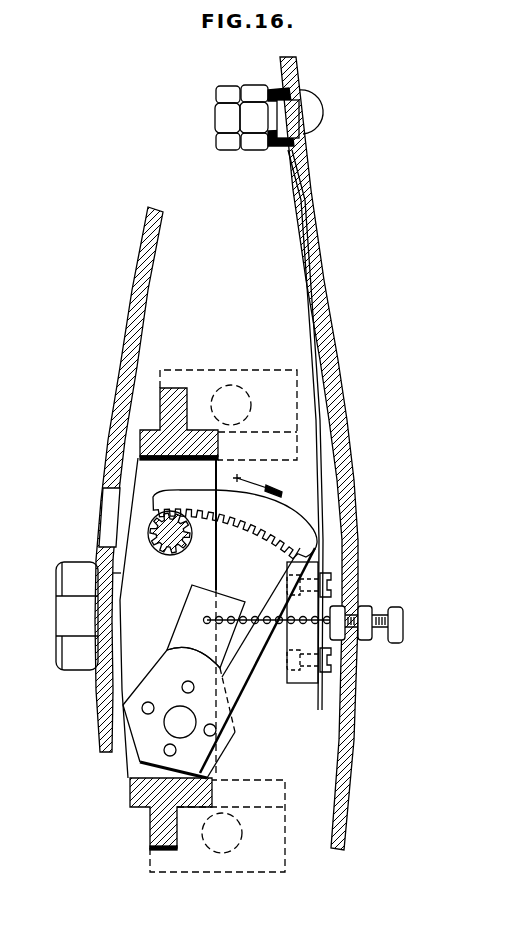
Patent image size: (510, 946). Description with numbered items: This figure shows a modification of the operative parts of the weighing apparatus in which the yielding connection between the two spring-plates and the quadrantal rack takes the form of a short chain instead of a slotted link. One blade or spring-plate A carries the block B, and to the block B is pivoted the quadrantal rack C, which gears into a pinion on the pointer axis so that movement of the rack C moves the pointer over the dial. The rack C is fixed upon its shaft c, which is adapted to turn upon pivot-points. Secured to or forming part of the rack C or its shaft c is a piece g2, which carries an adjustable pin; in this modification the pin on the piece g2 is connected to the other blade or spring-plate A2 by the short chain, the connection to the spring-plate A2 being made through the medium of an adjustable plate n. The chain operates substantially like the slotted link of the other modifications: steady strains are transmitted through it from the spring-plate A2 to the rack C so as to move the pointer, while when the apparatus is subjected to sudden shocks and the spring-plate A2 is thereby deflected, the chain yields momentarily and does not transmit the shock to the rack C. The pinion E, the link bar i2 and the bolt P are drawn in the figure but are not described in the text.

The blade or spring-plate A is at (135, 291).
The other blade or spring-plate A2 is at (328, 453).
The adjustable plate n is at (322, 402).
The block B is at (204, 621).
The quadrantal rack C is at (235, 516).
The pinion E is at (184, 538).
The piece g2 is at (206, 626).
The shaft c is at (179, 712).
The link bar i2 is at (257, 660).
The bolt P is at (382, 642).